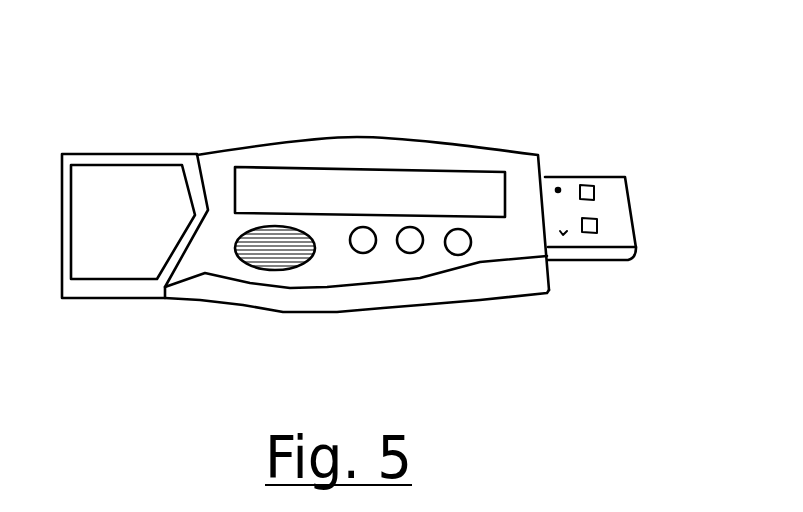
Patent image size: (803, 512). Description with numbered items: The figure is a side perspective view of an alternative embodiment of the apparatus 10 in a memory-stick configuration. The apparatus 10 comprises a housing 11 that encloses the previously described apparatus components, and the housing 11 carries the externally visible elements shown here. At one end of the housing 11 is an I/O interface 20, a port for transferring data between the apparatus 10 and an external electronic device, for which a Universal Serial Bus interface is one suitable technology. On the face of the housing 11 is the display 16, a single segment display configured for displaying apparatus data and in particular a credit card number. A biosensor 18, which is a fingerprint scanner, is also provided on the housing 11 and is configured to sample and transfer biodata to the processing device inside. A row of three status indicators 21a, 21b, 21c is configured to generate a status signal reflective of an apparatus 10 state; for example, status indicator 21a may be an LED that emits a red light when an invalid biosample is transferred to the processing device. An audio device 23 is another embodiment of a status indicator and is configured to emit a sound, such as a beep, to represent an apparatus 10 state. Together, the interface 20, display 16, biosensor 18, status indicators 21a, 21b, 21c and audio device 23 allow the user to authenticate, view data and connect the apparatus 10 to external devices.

The apparatus 10 is at (382, 215).
The housing 11 is at (293, 142).
The display device 16 is at (447, 180).
The biosensor 18 is at (137, 250).
The I/O interface 20 is at (613, 255).
The status indicator 21a is at (372, 250).
The status indicator 21b is at (419, 250).
The status indicator 21c is at (467, 251).
The audio device 23 is at (250, 268).